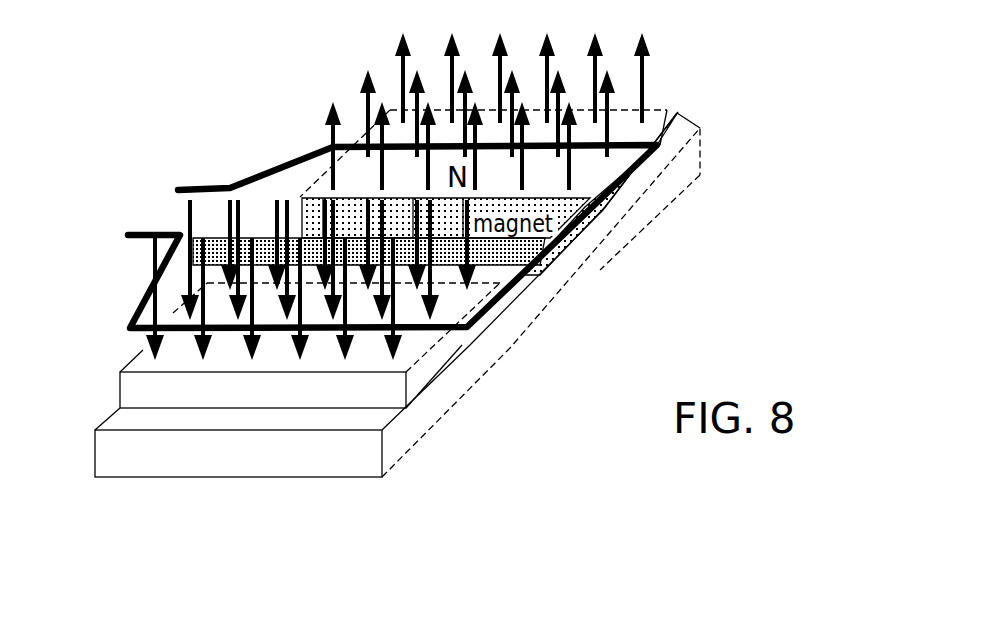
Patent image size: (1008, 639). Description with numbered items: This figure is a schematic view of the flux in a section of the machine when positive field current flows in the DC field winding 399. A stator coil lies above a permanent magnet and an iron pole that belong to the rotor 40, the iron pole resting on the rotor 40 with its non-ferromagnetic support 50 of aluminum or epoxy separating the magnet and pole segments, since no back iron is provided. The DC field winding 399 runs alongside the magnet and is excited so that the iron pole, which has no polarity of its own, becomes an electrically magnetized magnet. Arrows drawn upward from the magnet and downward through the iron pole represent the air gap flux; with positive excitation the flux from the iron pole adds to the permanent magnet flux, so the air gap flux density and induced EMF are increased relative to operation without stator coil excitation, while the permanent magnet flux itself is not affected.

The support 50 is at (123, 452).
The rotor 40 is at (448, 425).
The DC field winding 399 is at (573, 242).